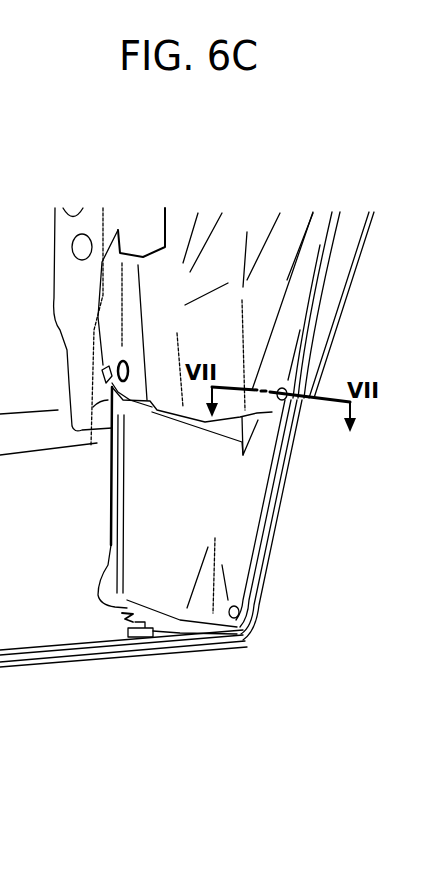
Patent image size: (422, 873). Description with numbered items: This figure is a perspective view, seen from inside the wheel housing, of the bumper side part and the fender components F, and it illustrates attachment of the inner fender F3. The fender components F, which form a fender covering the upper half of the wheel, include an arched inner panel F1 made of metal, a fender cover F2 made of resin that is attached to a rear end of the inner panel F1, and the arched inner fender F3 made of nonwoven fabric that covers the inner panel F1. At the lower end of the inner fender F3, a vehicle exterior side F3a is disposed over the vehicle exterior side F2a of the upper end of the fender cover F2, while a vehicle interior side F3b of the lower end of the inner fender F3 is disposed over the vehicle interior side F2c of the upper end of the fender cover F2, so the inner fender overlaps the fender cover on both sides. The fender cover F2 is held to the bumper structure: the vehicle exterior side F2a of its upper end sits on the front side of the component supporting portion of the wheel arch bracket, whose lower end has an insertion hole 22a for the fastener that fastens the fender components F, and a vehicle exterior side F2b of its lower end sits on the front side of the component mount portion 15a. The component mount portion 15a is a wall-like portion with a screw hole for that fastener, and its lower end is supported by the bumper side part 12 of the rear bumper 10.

The fender components F is at (197, 176).
The inner panel F1 is at (92, 218).
The fender cover F2 is at (160, 580).
The vehicle exterior side of upper end of fender cover F2a is at (266, 434).
The vehicle exterior side of lower end of fender cover F2b is at (235, 582).
The vehicle interior side of upper end of fender cover F2c is at (97, 445).
The inner fender F3 is at (247, 230).
The vehicle exterior side of lower end of inner fender F3a is at (281, 370).
The vehicle interior side of lower end of inner fender F3b is at (113, 346).
The component mount portion 15a is at (243, 612).
The insertion hole 22a is at (305, 408).
The bumper side part 12 is at (123, 653).
The rear bumper 10 is at (77, 602).